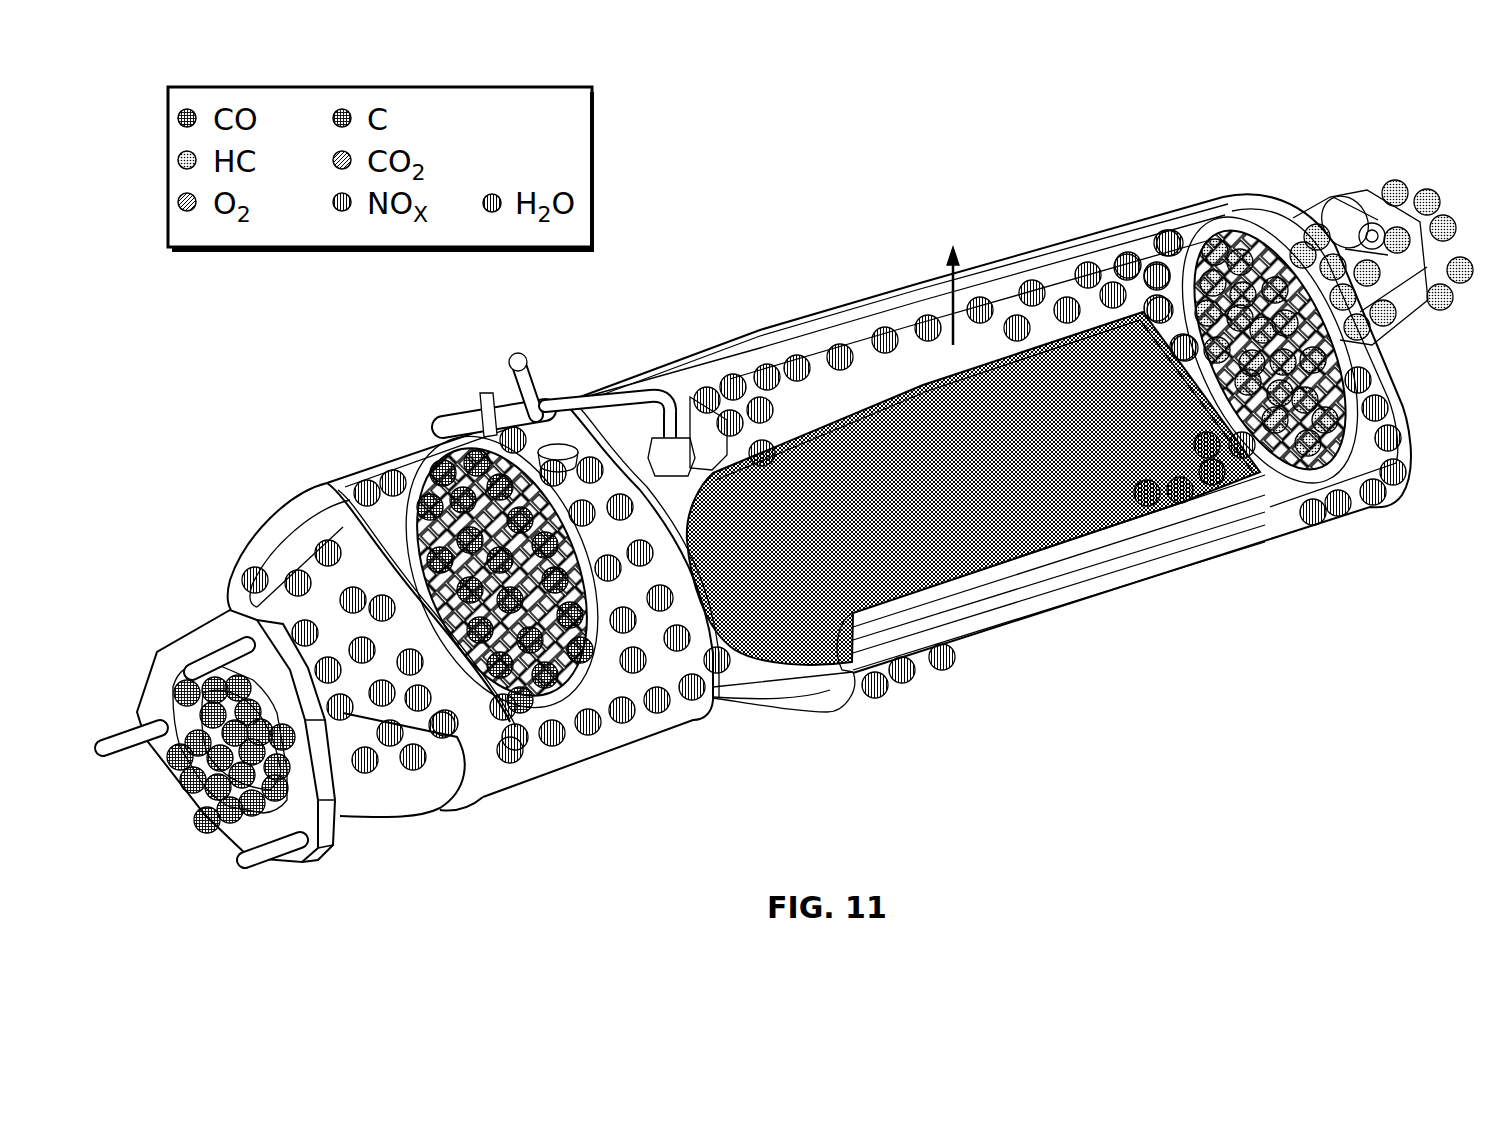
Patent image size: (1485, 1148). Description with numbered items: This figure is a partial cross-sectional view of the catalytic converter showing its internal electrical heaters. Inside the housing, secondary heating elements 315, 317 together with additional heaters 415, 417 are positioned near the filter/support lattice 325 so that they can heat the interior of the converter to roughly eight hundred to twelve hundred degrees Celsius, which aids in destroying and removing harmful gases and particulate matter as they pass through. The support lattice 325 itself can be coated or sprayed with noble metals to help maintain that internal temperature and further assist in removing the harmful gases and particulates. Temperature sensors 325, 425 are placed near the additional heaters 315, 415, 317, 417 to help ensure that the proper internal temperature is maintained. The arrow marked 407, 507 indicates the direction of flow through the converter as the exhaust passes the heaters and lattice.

The secondary heating element 315 is at (473, 541).
The additional heater 415 is at (423, 485).
The secondary heating element 317 is at (1259, 306).
The additional heater 417 is at (1225, 215).
The filter/support lattice 325 is at (1052, 557).
The temperature sensor 425 is at (660, 400).
The exhaust flow 407 is at (924, 258).
The exhaust flow 507 is at (945, 288).